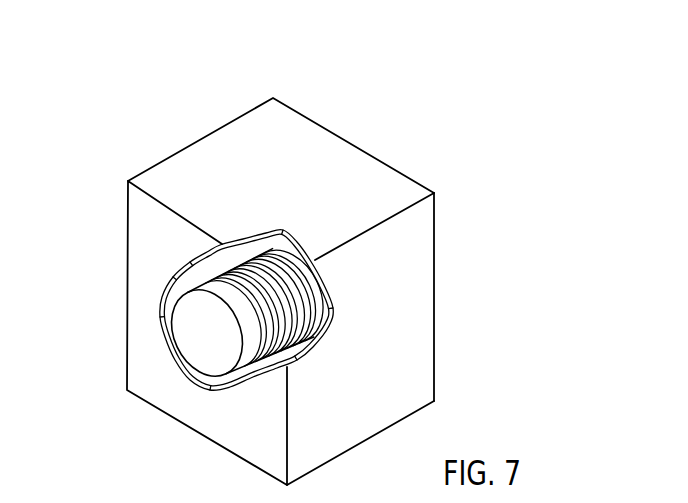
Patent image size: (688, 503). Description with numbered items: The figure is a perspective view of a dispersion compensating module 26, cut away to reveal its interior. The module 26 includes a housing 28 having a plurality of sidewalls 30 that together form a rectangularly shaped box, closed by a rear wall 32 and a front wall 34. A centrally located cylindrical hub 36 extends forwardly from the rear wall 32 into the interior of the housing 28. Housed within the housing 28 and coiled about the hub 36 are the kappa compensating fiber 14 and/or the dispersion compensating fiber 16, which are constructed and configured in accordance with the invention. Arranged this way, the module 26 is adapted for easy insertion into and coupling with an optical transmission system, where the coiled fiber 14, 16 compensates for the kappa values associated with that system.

The kappa compensating fiber 14 is at (303, 305).
The dispersion compensating fiber 16 is at (303, 340).
The dispersion compensating module 26 is at (441, 165).
The housing 28 is at (435, 247).
The sidewalls 30 is at (415, 373).
The rear wall 32 is at (180, 360).
The front wall 34 is at (188, 402).
The cylindrical hub 36 is at (290, 250).